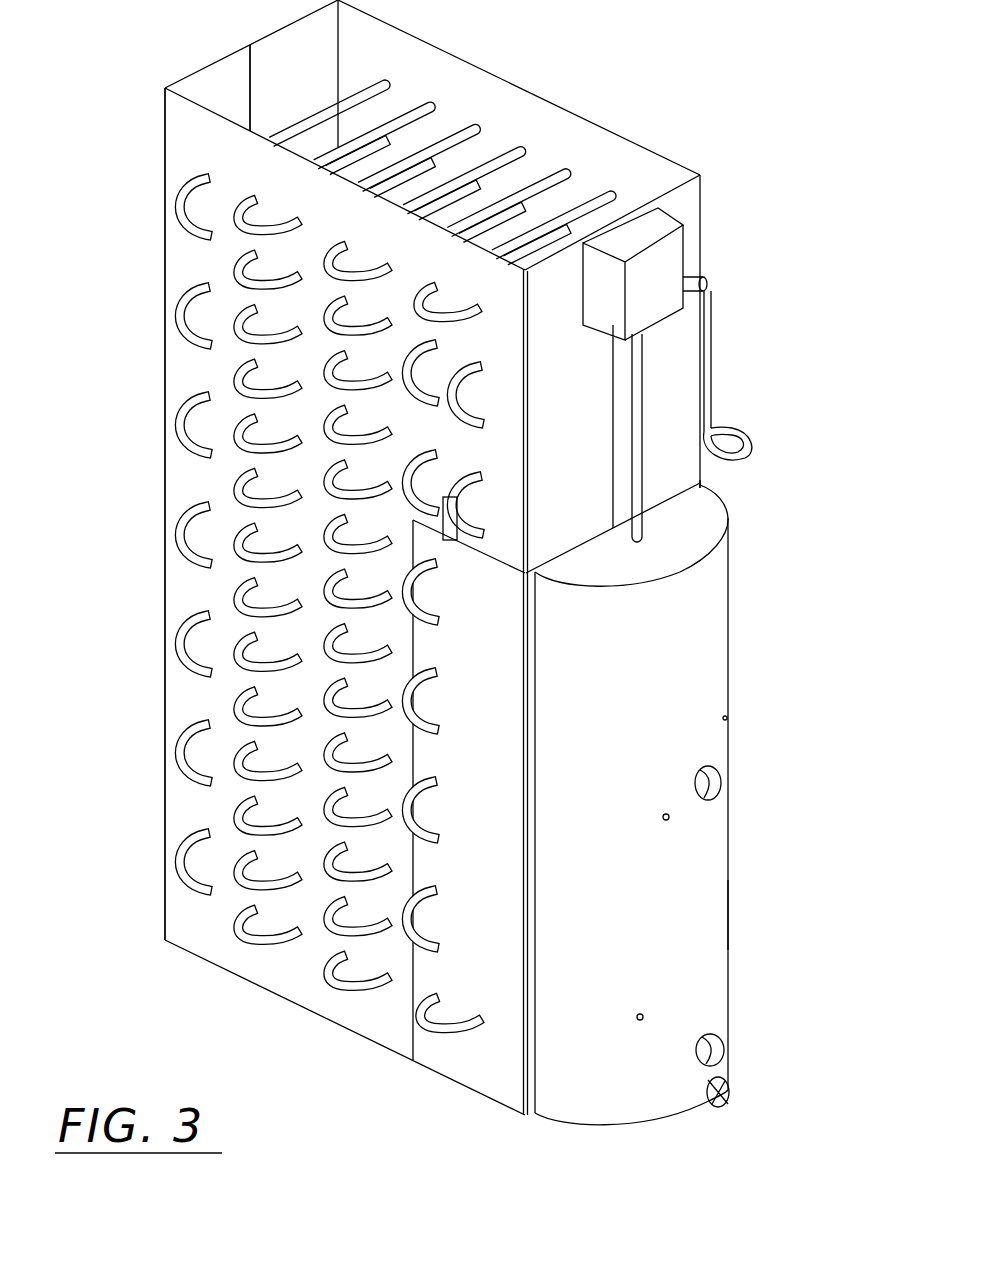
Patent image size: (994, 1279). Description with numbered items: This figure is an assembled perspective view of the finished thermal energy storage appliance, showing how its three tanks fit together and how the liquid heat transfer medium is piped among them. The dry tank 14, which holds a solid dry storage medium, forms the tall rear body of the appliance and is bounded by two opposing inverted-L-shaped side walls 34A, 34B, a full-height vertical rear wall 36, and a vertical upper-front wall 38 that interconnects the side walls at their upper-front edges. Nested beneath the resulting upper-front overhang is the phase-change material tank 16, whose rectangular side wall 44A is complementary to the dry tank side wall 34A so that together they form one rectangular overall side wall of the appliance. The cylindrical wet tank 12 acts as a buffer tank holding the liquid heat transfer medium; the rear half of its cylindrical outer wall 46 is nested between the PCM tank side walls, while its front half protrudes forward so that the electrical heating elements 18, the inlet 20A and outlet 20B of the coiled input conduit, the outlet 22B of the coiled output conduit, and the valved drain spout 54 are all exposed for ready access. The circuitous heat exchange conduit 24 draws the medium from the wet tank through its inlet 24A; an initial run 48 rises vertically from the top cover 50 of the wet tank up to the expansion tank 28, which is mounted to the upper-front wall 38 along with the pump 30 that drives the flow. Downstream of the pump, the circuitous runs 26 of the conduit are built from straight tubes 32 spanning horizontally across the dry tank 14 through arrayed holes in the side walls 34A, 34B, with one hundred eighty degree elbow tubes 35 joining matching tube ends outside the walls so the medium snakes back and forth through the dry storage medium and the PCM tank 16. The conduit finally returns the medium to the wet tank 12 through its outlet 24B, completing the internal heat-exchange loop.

The wet tank 12 is at (712, 670).
The dry tank 14 is at (186, 375).
The phase-change material tank 16 is at (481, 1060).
The electrical heating element 18 is at (722, 786).
The inlet 20A is at (669, 817).
The outlet 20B is at (643, 1017).
The outlet 22B is at (726, 718).
The circuitous heat exchange conduit 24 is at (722, 362).
The inlet 24A is at (702, 490).
The outlet 24B is at (472, 1003).
The circuitous runs 26 is at (300, 120).
The expansion tank 28 is at (672, 262).
The pump 30 is at (708, 287).
The straight tubes 32 is at (413, 152).
The side wall 34A is at (188, 592).
The side wall 34B is at (500, 118).
The 180-degree elbow tubes 35 is at (243, 323).
The rear wall 36 is at (302, 77).
The upper-front wall 38 is at (586, 420).
The side wall 44A is at (497, 771).
The cylindrical outer wall 46 is at (712, 915).
The initial run 48 is at (642, 420).
The top cover 50 is at (680, 562).
The valved drain spout 54 is at (732, 1100).